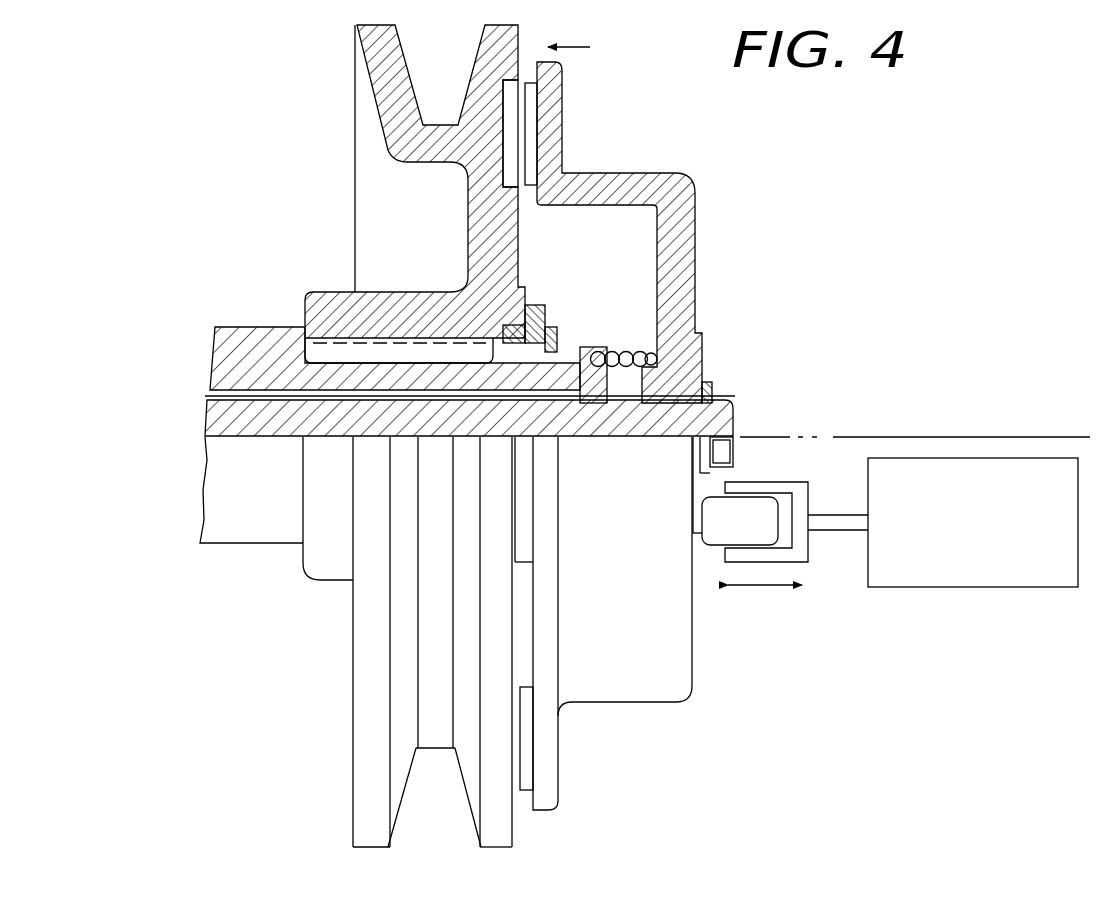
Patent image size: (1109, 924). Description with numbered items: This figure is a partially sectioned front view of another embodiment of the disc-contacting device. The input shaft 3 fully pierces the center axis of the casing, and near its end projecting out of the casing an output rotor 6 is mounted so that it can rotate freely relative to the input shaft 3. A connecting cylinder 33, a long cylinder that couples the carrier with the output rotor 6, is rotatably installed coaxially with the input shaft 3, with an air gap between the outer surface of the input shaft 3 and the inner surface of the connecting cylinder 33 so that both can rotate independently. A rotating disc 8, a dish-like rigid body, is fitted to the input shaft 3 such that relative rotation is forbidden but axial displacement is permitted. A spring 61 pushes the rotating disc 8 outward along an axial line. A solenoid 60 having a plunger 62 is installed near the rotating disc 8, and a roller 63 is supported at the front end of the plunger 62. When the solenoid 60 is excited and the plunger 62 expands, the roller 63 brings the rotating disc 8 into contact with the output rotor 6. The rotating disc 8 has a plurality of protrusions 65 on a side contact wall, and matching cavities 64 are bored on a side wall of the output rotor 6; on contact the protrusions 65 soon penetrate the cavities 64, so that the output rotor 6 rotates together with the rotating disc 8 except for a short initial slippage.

The input shaft 3 is at (233, 413).
The output rotor 6 is at (387, 62).
The rotating disc 8 is at (683, 237).
The connecting cylinder 33 is at (215, 362).
The solenoid 60 is at (935, 542).
The spring 61 is at (640, 355).
The plunger 62 is at (823, 522).
The roller 63 is at (727, 525).
The cavities 64 is at (505, 100).
The protrusions 65 is at (530, 130).